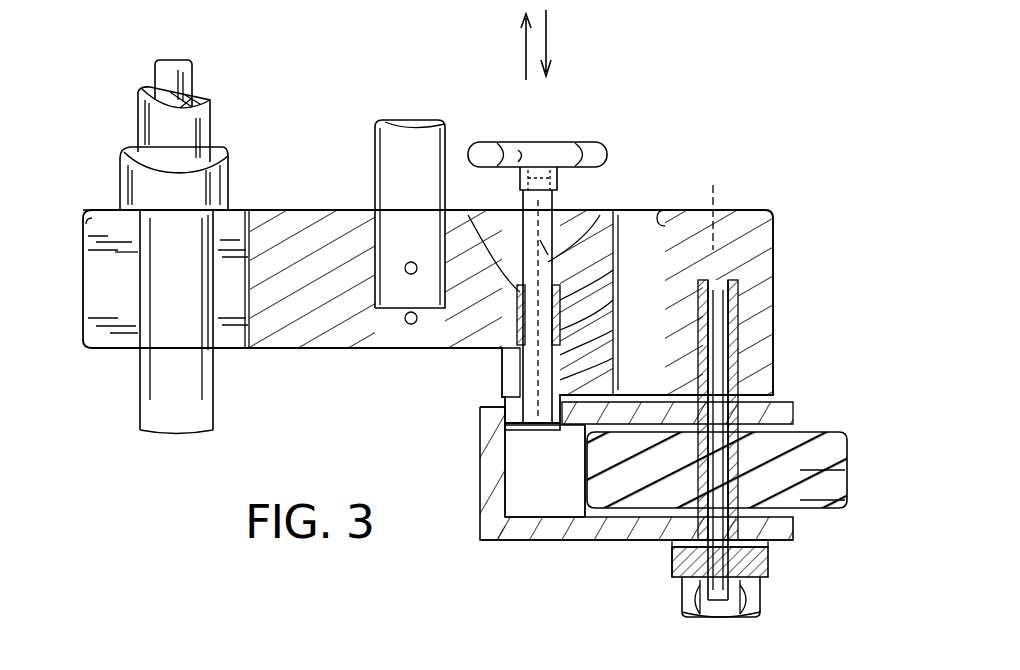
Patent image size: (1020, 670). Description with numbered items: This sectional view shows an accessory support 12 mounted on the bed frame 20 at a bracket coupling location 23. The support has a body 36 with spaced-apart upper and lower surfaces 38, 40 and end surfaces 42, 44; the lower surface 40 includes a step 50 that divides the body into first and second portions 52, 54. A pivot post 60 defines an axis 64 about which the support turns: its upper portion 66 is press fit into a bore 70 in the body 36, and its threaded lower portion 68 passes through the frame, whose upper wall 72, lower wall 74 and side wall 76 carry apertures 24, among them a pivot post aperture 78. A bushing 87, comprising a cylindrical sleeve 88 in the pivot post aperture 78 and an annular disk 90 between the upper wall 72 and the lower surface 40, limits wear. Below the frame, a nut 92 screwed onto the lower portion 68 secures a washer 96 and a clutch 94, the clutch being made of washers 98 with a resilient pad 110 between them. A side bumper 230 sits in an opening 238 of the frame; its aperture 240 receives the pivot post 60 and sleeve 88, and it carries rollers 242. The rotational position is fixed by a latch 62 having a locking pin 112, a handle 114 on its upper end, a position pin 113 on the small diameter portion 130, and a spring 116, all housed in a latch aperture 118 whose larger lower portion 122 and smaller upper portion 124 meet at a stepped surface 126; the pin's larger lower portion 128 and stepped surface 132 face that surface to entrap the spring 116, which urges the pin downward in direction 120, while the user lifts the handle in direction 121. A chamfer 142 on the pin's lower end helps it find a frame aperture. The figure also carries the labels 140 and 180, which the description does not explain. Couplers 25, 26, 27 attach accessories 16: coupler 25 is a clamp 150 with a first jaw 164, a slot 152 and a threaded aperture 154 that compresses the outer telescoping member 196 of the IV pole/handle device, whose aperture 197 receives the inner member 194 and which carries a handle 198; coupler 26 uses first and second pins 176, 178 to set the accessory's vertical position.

The accessory support 12 is at (788, 128).
The accessory 16 is at (236, 116).
The frame 20 is at (790, 405).
The bracket coupling location 23 is at (605, 540).
The apertures 24 is at (790, 410).
The coupler 25 is at (248, 198).
The coupler 26 is at (347, 176).
The coupler 27 is at (661, 160).
The body 36 is at (318, 330).
The upper surface 38 is at (103, 210).
The lower surface 40 is at (352, 355).
The end surface 42 is at (86, 244).
The end surface 44 is at (762, 268).
The step 50 is at (505, 380).
The first portion 52 is at (755, 238).
The second portion 54 is at (100, 345).
The pivot post 60 is at (738, 330).
The latch 62 is at (582, 96).
The axis 64 is at (718, 190).
The upper portion 66 is at (722, 300).
The threaded lower portion 68 is at (760, 592).
The bore 70 is at (779, 386).
The upper wall 72 is at (482, 400).
The lower wall 74 is at (502, 542).
The side wall 76 is at (482, 498).
The pivot post aperture 78 is at (690, 395).
The bushing 87 is at (795, 398).
The cylindrical sleeve 88 is at (848, 448).
The annular disk 90 is at (598, 425).
The nut 92 is at (750, 612).
The clutch 94 is at (780, 572).
The washer 96 is at (672, 556).
The washers 98 is at (694, 615).
The resilient pad 110 is at (680, 578).
The locking pin 112 is at (525, 350).
The position pin 113 is at (550, 240).
The handle 114 is at (560, 140).
The spring 116 is at (615, 285).
The latch aperture 118 is at (528, 212).
The direction 120 is at (550, 38).
The direction 121 is at (522, 40).
The lower portion 122 is at (615, 340).
The upper portion 124 is at (605, 212).
The stepped surface 126 is at (482, 234).
The lower portion 128 is at (615, 380).
The upper portion 130 is at (614, 258).
The stepped surface 132 is at (615, 318).
The cavity bottom 140 is at (552, 470).
The chamfer 142 is at (505, 448).
The clamp 150 is at (92, 130).
The slot 152 is at (92, 300).
The threaded aperture 154 is at (112, 270).
The first jaw 164 is at (95, 222).
The first pin 176 is at (406, 324).
The second pin 178 is at (406, 272).
The notch 180 is at (662, 215).
The inner telescoping member 194 is at (172, 62).
The outer telescoping member 196 is at (142, 100).
The aperture 197 is at (202, 98).
The handle 198 is at (124, 160).
The side bumper 230 is at (862, 528).
The opening 238 is at (855, 428).
The aperture 240 is at (848, 472).
The rollers 242 is at (848, 500).